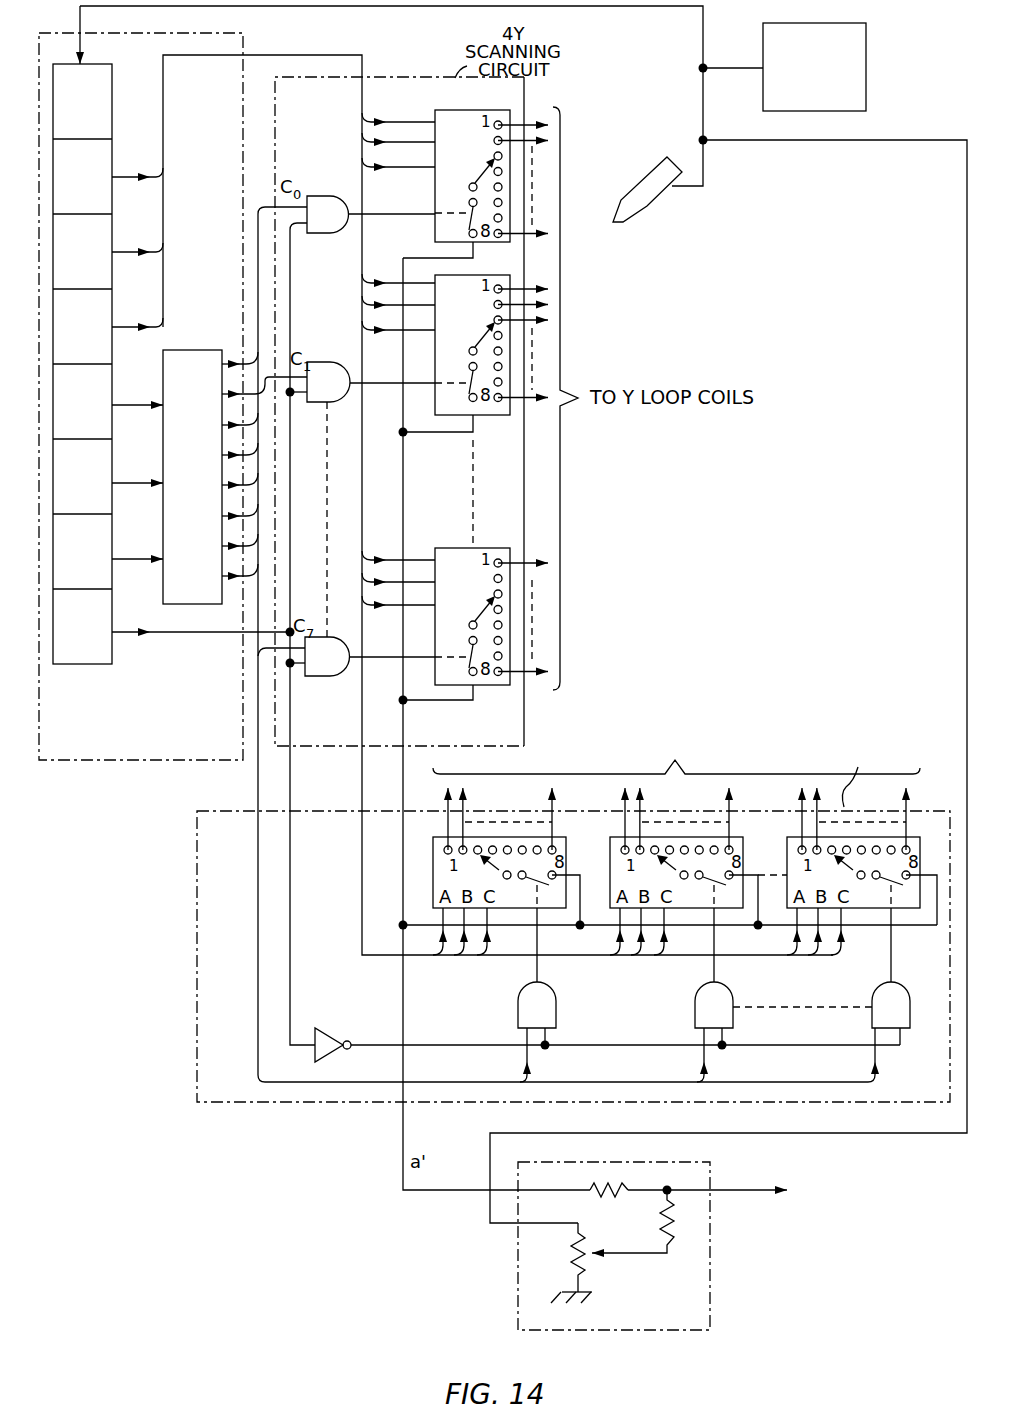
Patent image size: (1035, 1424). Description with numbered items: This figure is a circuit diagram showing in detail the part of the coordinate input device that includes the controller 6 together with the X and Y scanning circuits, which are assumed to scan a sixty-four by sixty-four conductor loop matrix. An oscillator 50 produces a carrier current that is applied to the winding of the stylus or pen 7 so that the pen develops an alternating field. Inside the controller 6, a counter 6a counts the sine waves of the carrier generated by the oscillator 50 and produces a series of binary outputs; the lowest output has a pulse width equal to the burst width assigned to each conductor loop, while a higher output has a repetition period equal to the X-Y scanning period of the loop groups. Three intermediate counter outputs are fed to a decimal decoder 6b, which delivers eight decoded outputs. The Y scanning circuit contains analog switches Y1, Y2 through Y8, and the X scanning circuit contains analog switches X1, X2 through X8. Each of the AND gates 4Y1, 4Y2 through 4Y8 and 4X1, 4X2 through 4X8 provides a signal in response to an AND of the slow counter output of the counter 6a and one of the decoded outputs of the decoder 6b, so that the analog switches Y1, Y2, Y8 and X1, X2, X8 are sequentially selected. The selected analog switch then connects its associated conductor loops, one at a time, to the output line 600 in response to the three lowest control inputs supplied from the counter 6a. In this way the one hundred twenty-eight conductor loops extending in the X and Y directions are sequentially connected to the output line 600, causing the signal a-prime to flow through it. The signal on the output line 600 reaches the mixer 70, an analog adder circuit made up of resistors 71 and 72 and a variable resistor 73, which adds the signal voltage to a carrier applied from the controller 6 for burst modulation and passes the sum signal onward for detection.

The controller 6 is at (178, 33).
The 2^n-bit counter 6a is at (93, 666).
The decimal decoder 6b is at (195, 606).
The stylus or pen 7 is at (663, 194).
The oscillator 50 is at (866, 66).
The output line 600 is at (398, 1022).
The mixer 70 is at (712, 1290).
The resistor 71 is at (614, 1200).
The resistor 72 is at (675, 1228).
The variable resistor 73 is at (571, 1264).
The AND gate 4Y1 is at (323, 190).
The AND gate 4Y2 is at (332, 358).
The AND gate 4Y8 is at (320, 633).
The analog switch Y1 is at (460, 110).
The analog switch Y2 is at (478, 417).
The analog switch Y8 is at (480, 548).
The analog switch X1 is at (525, 910).
The analog switch X2 is at (702, 910).
The analog switch X8 is at (880, 910).
The AND gate 4X1 is at (516, 1002).
The AND gate 4X2 is at (693, 1002).
The AND gate 4X8 is at (870, 1002).